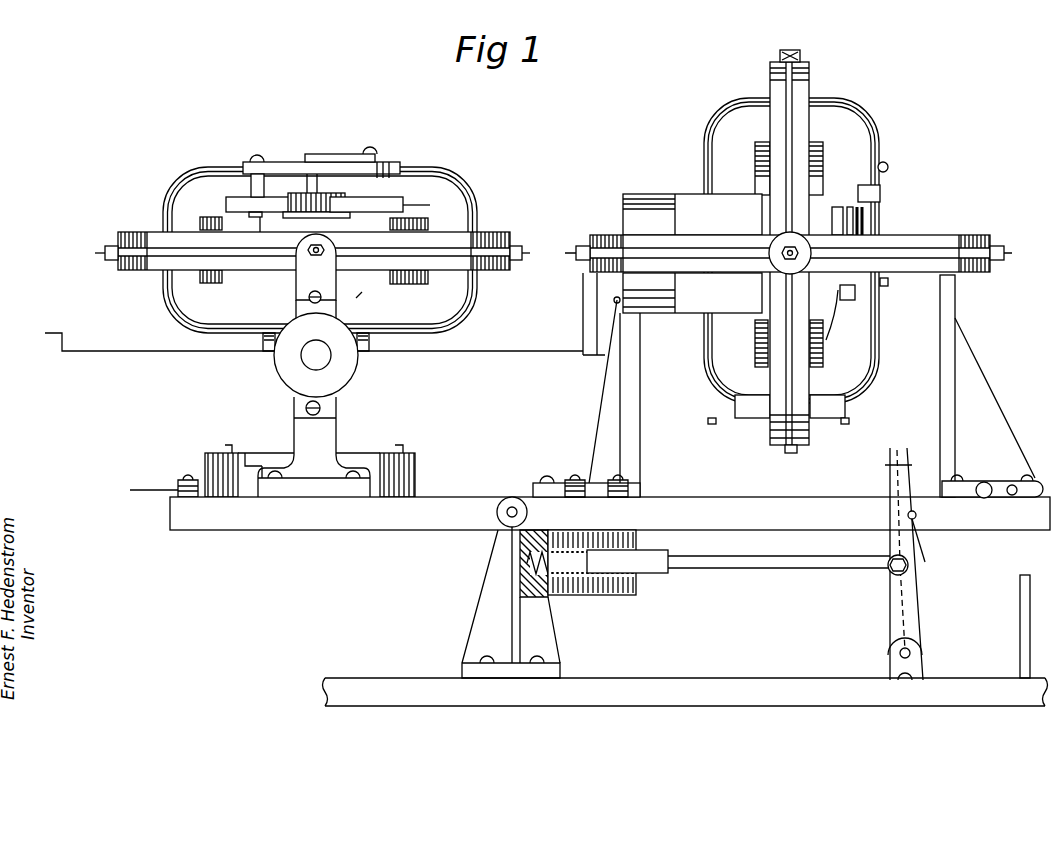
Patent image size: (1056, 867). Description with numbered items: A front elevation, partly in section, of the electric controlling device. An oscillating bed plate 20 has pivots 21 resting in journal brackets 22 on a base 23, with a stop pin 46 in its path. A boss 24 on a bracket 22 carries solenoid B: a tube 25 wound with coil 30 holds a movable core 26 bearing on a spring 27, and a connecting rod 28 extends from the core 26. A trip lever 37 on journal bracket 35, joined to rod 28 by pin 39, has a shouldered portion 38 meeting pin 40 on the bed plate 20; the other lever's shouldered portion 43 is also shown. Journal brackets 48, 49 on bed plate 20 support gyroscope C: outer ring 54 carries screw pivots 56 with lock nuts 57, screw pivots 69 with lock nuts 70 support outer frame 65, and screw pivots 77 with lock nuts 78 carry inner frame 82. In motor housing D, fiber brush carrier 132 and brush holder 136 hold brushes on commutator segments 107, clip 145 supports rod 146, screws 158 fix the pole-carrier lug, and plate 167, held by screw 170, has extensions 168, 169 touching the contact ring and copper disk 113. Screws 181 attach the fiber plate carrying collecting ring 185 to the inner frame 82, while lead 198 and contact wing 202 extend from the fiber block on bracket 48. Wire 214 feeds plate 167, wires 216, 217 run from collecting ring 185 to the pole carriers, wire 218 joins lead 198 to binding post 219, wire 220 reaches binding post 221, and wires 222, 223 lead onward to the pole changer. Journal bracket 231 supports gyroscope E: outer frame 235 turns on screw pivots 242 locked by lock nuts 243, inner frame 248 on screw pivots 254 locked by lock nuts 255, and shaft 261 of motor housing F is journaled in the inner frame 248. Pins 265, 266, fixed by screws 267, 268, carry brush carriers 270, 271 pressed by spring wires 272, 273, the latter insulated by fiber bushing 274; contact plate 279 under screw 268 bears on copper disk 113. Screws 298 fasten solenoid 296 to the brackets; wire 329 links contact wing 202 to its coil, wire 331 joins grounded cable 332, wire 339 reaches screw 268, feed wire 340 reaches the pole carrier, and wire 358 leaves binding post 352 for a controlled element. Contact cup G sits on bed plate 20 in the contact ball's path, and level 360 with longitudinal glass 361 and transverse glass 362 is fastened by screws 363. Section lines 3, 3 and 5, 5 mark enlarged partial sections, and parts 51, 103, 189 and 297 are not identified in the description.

The shaft 3 is at (70, 250).
The shaft 5 is at (548, 252).
The base plate 20 is at (610, 513).
The pivot 21 is at (512, 497).
The strut 22 is at (511, 602).
The floor 23 is at (685, 679).
The column 24 is at (532, 598).
The cylinder head 25 is at (520, 540).
The plunger 26 is at (665, 557).
The spring 27 is at (527, 565).
The rod 28 is at (779, 553).
The cylinder 30 is at (596, 588).
The lever pivot 35 is at (923, 656).
The lever center line 37 is at (893, 614).
The lever 38 is at (890, 462).
The pin 39 is at (888, 567).
The pin 40 is at (916, 515).
The link 43 is at (920, 542).
The post 46 is at (1020, 612).
The column 48 is at (640, 466).
The post 49 is at (940, 433).
The shaft end 51 is at (995, 243).
The shaft 54 is at (958, 224).
The nut 56 is at (565, 250).
The shaft end 57 is at (584, 235).
The vertical shaft 65 is at (770, 76).
The boss 69 is at (783, 256).
The bolt 70 is at (784, 250).
The nut 77 is at (800, 50).
The shaft end 78 is at (782, 56).
The frame wall 82 is at (870, 356).
The gear 103 is at (330, 196).
The flange 107 is at (568, 277).
The top plate 113 is at (318, 160).
The block 132 is at (822, 212).
The wire 136 is at (834, 222).
The block 145 is at (856, 295).
The block 146 is at (860, 305).
The bracket 158 is at (890, 282).
The bracket 167 is at (880, 196).
The block 168 is at (858, 196).
The frame wall 169 is at (880, 221).
The knob 170 is at (888, 167).
The nut 181 is at (714, 424).
The collar 185 is at (773, 430).
The block 189 is at (790, 406).
The bearing block 198 is at (623, 292).
The bearing block 202 is at (675, 194).
The frame 214 is at (880, 113).
The frame wall 216 is at (874, 380).
The frame wall 217 is at (704, 372).
The column 218 is at (640, 392).
The foot 219 is at (614, 482).
The tie rod 220 is at (604, 393).
The bolt 221 is at (573, 478).
The plate 222 is at (642, 492).
The plate 223 is at (540, 483).
The post 231 is at (338, 429).
The shaft end 235 is at (138, 234).
The hub 242 is at (316, 267).
The hub 243 is at (337, 258).
The frame 248 is at (165, 304).
The nut 254 is at (102, 249).
The nut 255 is at (106, 258).
The pipe 261 is at (308, 187).
The stub 265 is at (266, 230).
The shaft face 266 is at (376, 241).
The bolt 267 is at (262, 154).
The bolt 268 is at (372, 152).
The bar 270 is at (238, 197).
The bar 271 is at (390, 204).
The bearing 272 is at (196, 244).
The bearing 273 is at (436, 210).
The rod 274 is at (420, 205).
The cap plate 279 is at (340, 154).
The disc 296 is at (277, 372).
The post 297 is at (294, 406).
The screw 298 is at (308, 298).
The arm 329 is at (462, 353).
The arm 331 is at (178, 353).
The arm 332 is at (68, 325).
The frame 339 is at (458, 180).
The frame 340 is at (480, 300).
The bolt 352 is at (188, 478).
The plate 358 is at (150, 490).
The roller 360 is at (984, 498).
The roller 361 is at (1036, 502).
The strut 362 is at (984, 482).
The roller 363 is at (1012, 498).
The cylinder unit B is at (636, 592).
The gear box C is at (680, 104).
The gear post D is at (760, 142).
The left unit E is at (195, 132).
The left unit F is at (367, 299).
The bearing G is at (416, 463).